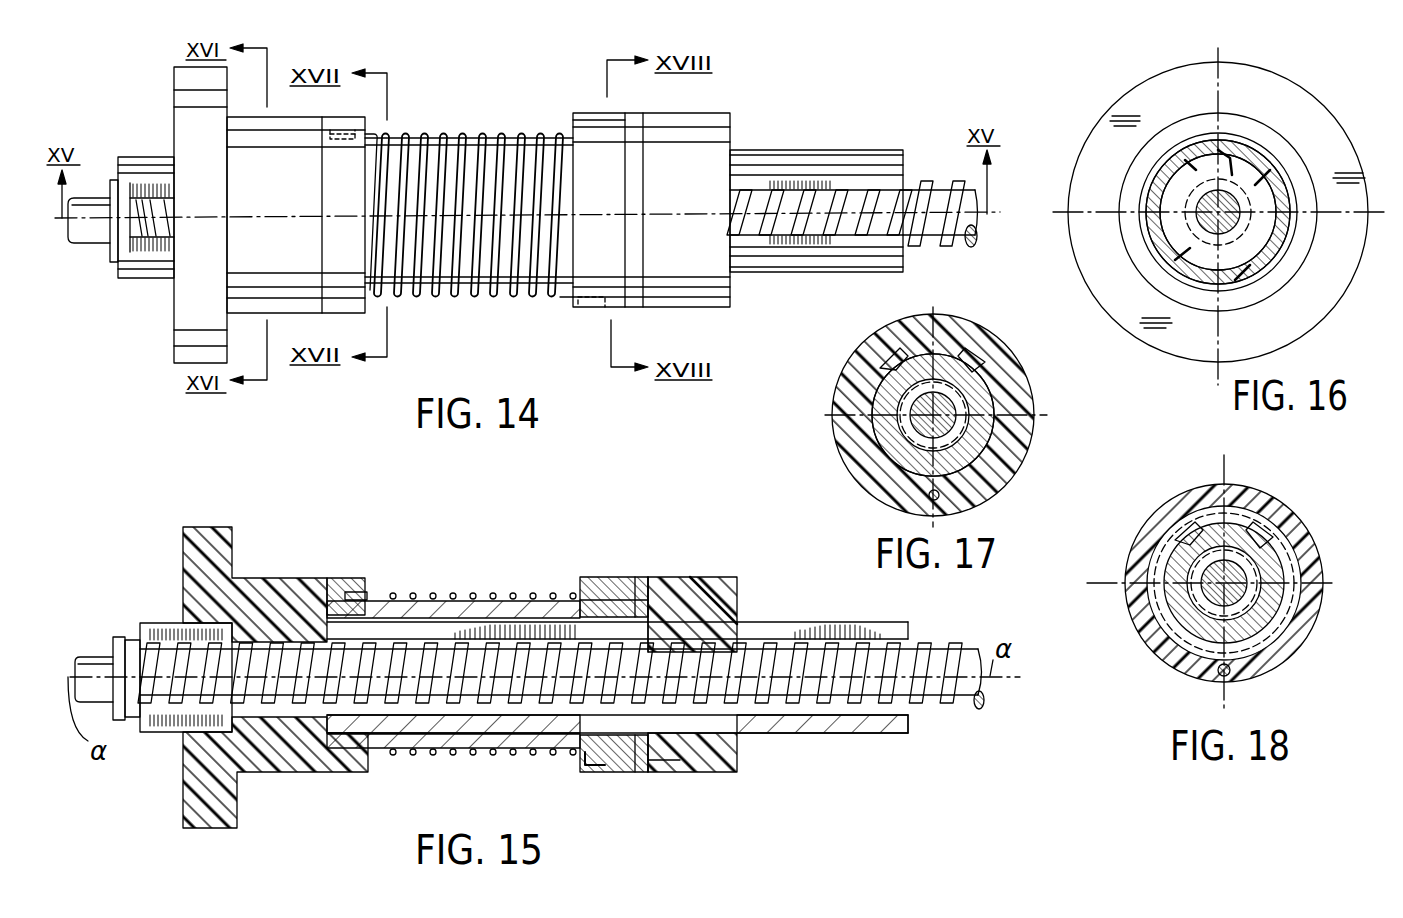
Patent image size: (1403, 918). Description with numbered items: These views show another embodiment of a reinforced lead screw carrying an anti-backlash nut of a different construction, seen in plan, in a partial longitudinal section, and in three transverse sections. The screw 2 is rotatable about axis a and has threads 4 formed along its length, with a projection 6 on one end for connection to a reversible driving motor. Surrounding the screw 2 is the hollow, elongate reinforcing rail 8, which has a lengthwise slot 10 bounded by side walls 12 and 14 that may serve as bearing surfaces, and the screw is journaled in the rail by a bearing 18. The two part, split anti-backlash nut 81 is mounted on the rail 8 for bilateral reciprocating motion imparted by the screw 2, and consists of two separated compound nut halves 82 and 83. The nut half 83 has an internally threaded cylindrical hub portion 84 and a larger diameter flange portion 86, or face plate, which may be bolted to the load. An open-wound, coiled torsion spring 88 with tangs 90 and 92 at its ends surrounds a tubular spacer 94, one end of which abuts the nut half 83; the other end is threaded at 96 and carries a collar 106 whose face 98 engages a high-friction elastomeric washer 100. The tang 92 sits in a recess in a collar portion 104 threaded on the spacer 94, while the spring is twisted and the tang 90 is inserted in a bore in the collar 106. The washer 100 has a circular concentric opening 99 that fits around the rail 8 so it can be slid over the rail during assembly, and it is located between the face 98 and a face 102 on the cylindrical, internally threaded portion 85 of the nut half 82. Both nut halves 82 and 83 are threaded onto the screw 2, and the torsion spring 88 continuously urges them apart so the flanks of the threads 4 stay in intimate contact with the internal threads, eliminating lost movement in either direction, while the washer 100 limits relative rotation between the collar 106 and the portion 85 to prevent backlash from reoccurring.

In FIG. 14, the screw 2 is at (970, 195).
In FIG. 15, the screw 2 is at (986, 700).
In FIG. 16, the screw 2 is at (1208, 224).
In FIG. 17, the screw 2 is at (916, 425).
In FIG. 14, the threads 4 is at (940, 236).
In FIG. 15, the threads 4 is at (950, 707).
In FIG. 15, the projection 6 is at (98, 657).
In FIG. 14, the reinforcing rail 8 is at (866, 150).
In FIG. 15, the reinforcing rail 8 is at (860, 735).
In FIG. 14, the slot 10 is at (136, 200).
In FIG. 14, the side wall 12 is at (843, 185).
In FIG. 15, the side wall 12 is at (885, 630).
In FIG. 16, the side wall 12 is at (1232, 150).
In FIG. 17, the side wall 12 is at (946, 365).
In FIG. 18, the side wall 12 is at (1205, 520).
In FIG. 14, the side wall 14 is at (840, 237).
In FIG. 16, the side wall 14 is at (1200, 150).
In FIG. 17, the side wall 14 is at (921, 355).
In FIG. 18, the side wall 14 is at (1240, 540).
In FIG. 15, the bearing 18 is at (115, 640).
In FIG. 14, the anti-backlash nut 81 is at (542, 67).
In FIG. 15, the anti-backlash nut 81 is at (492, 521).
In FIG. 14, the nut half 82 is at (723, 91).
In FIG. 15, the nut half 82 is at (712, 520).
In FIG. 14, the nut half 83 is at (378, 58).
In FIG. 15, the nut half 83 is at (306, 535).
In FIG. 14, the hub portion 84 is at (290, 253).
In FIG. 14, the internally threaded portion 85 is at (697, 188).
In FIG. 15, the internally threaded portion 85 is at (718, 772).
In FIG. 14, the flange portion 86 is at (175, 117).
In FIG. 15, the flange portion 86 is at (275, 677).
In FIG. 14, the torsion spring 88 is at (479, 136).
In FIG. 15, the torsion spring 88 is at (478, 596).
In FIG. 14, the tang 90 is at (607, 303).
In FIG. 15, the tang 90 is at (605, 765).
In FIG. 18, the tang 90 is at (1230, 672).
In FIG. 14, the tang 92 is at (335, 140).
In FIG. 15, the tang 92 is at (357, 592).
In FIG. 17, the tang 92 is at (940, 494).
In FIG. 14, the tubular spacer 94 is at (447, 133).
In FIG. 15, the tubular spacer 94 is at (531, 600).
In FIG. 15, the threads 96 is at (600, 600).
In FIG. 14, the face 98 is at (628, 250).
In FIG. 15, the face 98 is at (660, 585).
In FIG. 15, the circular concentric opening 99 is at (665, 760).
In FIG. 14, the elastomeric washer 100 is at (632, 113).
In FIG. 15, the elastomeric washer 100 is at (641, 580).
In FIG. 15, the face 102 is at (706, 578).
In FIG. 15, the collar portion 104 is at (340, 578).
In FIG. 14, the collar 106 is at (598, 113).
In FIG. 15, the collar 106 is at (600, 578).